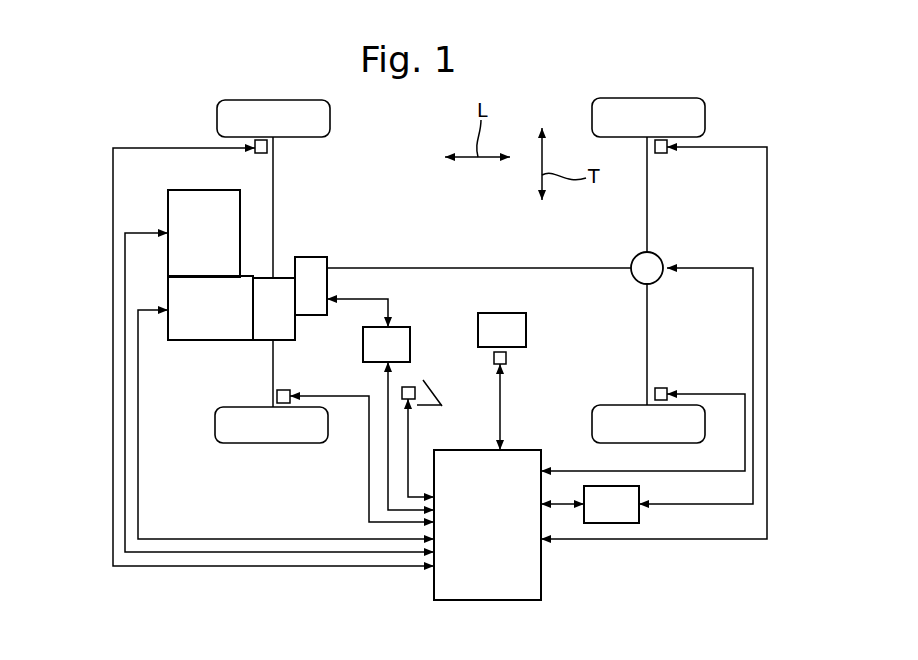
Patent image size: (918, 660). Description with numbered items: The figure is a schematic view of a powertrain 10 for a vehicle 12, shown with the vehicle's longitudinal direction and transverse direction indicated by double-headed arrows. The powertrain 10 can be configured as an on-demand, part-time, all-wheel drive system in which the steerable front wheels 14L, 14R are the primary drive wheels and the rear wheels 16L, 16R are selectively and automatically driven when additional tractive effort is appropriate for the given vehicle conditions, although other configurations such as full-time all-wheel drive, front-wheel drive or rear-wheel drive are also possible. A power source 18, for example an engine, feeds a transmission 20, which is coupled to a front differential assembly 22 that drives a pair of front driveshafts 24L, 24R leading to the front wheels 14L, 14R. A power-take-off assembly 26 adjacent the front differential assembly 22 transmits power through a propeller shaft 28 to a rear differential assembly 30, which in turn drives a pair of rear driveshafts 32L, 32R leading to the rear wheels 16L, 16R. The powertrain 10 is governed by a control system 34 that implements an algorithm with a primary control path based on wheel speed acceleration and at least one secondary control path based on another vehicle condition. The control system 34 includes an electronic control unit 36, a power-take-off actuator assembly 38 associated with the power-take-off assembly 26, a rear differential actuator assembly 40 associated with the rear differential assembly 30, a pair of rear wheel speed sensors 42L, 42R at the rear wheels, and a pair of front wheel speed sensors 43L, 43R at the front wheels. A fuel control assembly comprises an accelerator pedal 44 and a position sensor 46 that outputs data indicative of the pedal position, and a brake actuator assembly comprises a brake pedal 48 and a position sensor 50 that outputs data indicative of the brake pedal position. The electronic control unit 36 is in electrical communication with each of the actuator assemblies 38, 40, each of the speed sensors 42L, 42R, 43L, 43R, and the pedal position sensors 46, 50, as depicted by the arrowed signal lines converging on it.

The powertrain 10 is at (150, 298).
The vehicle 12 is at (93, 262).
The front wheel 14R is at (332, 118).
The front wheel 14L is at (215, 427).
The rear wheel 16R is at (707, 120).
The rear wheel 16L is at (592, 415).
The power source 18 is at (204, 233).
The transmission 20 is at (210, 308).
The front differential assembly 22 is at (265, 283).
The front driveshaft 24R is at (275, 180).
The front driveshaft 24L is at (273, 375).
The power-take-off assembly 26 is at (317, 288).
The propeller shaft 28 is at (467, 268).
The rear differential assembly 30 is at (657, 253).
The rear driveshaft 32R is at (649, 190).
The rear driveshaft 32L is at (647, 342).
The control system 34 is at (702, 559).
The electronic control unit 36 is at (178, 360).
The power-take-off actuator assembly 38 is at (386, 344).
The rear differential actuator assembly 40 is at (611, 504).
The rear wheel speed sensor 42R is at (661, 153).
The rear wheel speed sensor 42L is at (662, 388).
The front wheel speed sensor 43R is at (261, 153).
The front wheel speed sensor 43L is at (283, 390).
The accelerator pedal 44 is at (431, 397).
The position sensor 46 is at (409, 387).
The brake pedal 48 is at (502, 330).
The position sensor 50 is at (506, 358).